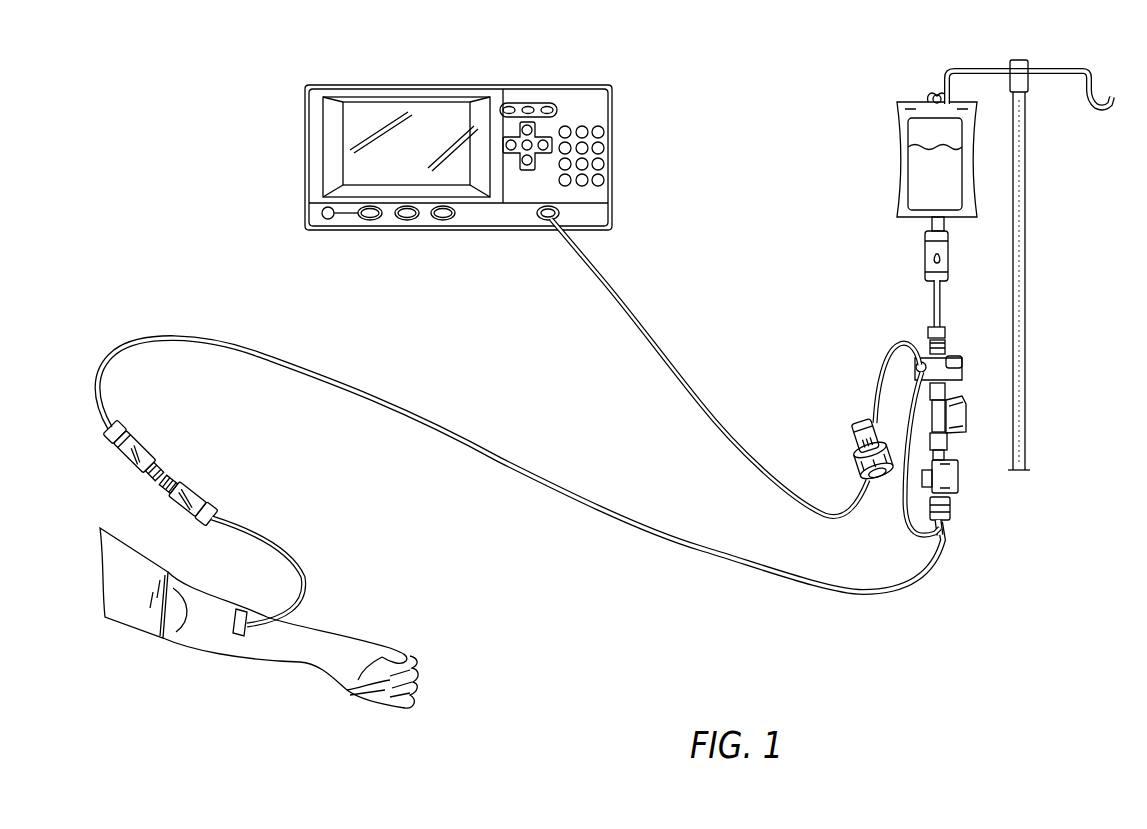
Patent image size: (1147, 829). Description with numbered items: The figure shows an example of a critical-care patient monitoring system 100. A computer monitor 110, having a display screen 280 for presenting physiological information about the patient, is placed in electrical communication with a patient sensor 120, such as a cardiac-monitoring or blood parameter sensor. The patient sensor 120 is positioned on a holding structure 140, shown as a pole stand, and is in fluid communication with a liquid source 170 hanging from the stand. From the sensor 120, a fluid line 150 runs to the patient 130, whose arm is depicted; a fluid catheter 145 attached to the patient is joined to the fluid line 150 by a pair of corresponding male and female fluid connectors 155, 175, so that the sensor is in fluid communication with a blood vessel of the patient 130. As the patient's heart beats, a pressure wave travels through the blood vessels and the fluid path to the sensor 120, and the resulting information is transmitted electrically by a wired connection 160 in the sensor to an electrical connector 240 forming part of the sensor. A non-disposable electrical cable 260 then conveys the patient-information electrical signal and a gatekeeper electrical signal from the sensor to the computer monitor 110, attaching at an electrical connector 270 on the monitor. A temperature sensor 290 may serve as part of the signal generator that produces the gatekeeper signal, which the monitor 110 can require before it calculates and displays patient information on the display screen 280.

The critical-care patient monitoring system 100 is at (198, 277).
The computer monitor 110 is at (457, 66).
The patient sensor 120 is at (970, 437).
The patient 130 is at (242, 664).
The holding structure 140 is at (1025, 185).
The fluid catheter 145 is at (307, 572).
The fluid line 150 is at (563, 487).
The fluid connector 155 is at (184, 482).
The wired connection 160 is at (877, 378).
The liquid source 170 is at (900, 152).
The fluid connector 175 is at (130, 455).
The electrical connector 240 is at (856, 462).
The non-disposable electrical cable 260 is at (645, 340).
The electrical connector 270 is at (548, 234).
The display screen 280 is at (353, 170).
The temperature sensor 290 is at (970, 405).